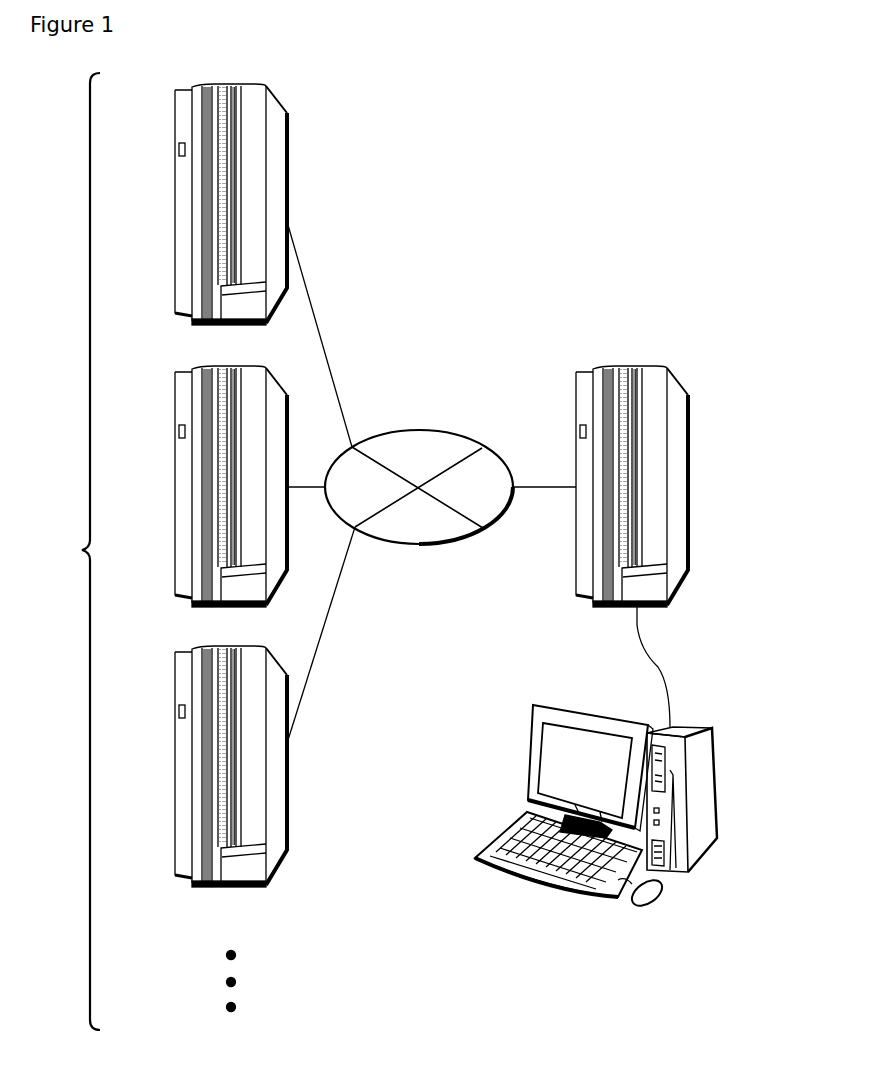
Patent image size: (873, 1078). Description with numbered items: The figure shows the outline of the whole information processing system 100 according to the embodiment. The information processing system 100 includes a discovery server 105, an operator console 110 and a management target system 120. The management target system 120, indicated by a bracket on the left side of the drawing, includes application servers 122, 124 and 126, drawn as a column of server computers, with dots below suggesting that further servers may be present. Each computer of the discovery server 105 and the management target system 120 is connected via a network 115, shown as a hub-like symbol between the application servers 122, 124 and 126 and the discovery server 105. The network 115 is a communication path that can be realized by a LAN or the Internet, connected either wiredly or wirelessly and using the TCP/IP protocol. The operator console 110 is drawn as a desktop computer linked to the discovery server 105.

The information processing system 100 is at (603, 180).
The discovery server 105 is at (664, 365).
The operator console 110 is at (713, 781).
The network 115 is at (436, 430).
The management target system 120 is at (132, 551).
The application server 122 is at (175, 160).
The application server 124 is at (175, 404).
The application server 126 is at (175, 746).